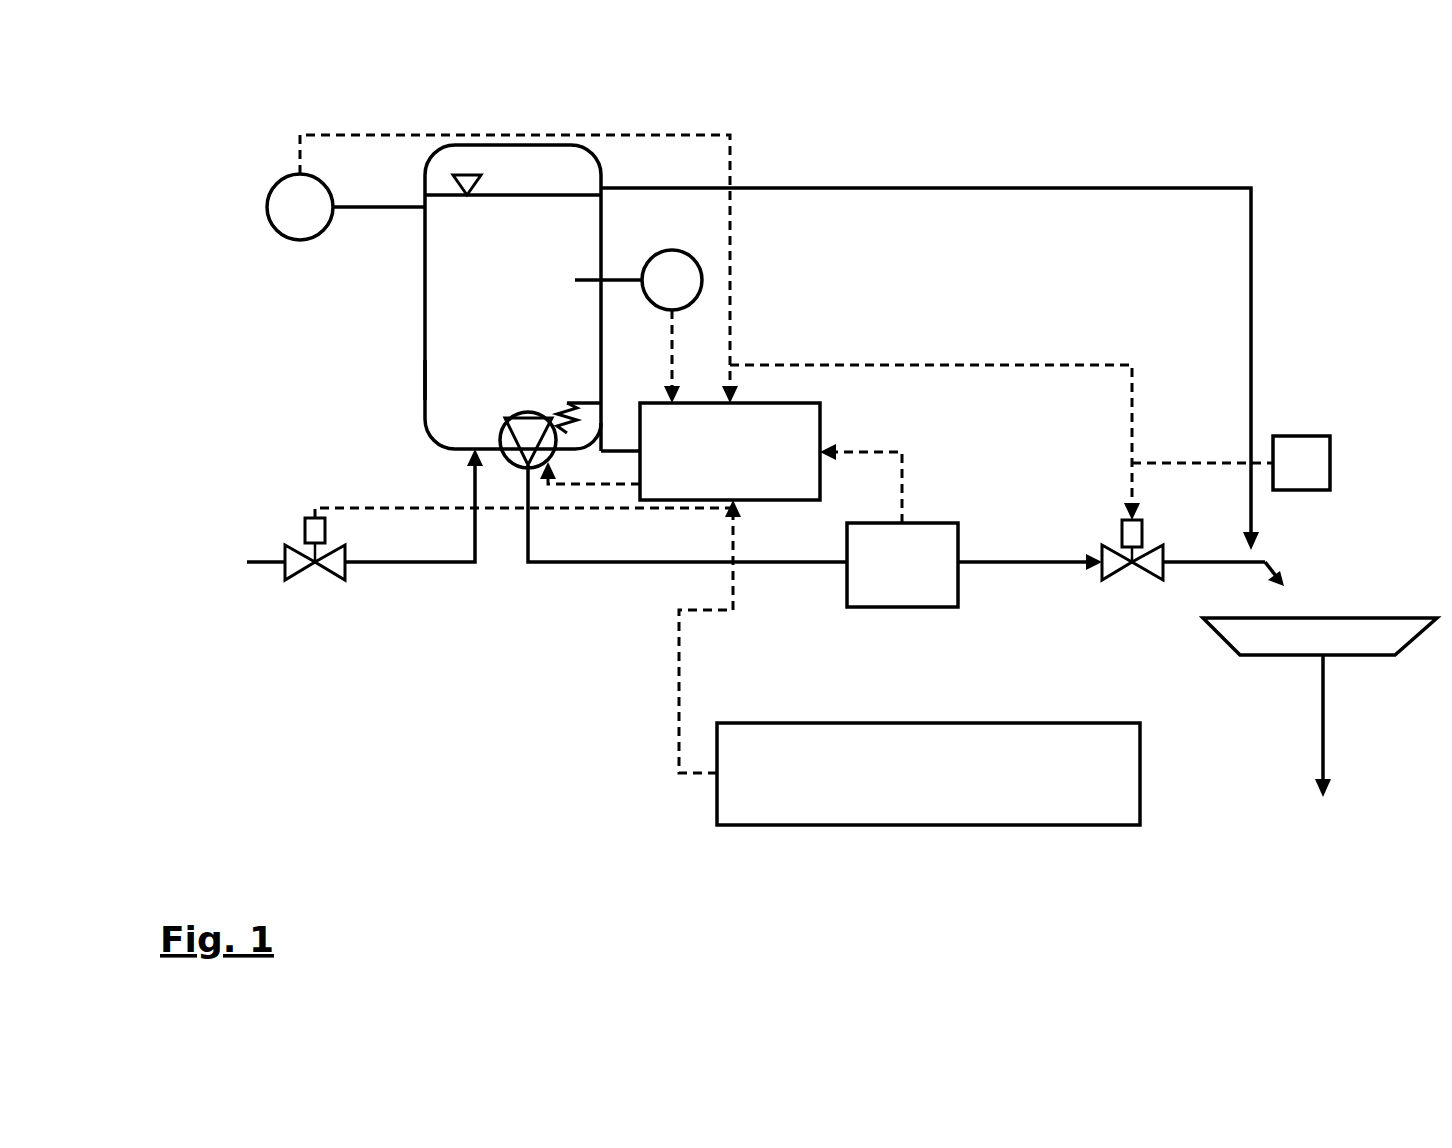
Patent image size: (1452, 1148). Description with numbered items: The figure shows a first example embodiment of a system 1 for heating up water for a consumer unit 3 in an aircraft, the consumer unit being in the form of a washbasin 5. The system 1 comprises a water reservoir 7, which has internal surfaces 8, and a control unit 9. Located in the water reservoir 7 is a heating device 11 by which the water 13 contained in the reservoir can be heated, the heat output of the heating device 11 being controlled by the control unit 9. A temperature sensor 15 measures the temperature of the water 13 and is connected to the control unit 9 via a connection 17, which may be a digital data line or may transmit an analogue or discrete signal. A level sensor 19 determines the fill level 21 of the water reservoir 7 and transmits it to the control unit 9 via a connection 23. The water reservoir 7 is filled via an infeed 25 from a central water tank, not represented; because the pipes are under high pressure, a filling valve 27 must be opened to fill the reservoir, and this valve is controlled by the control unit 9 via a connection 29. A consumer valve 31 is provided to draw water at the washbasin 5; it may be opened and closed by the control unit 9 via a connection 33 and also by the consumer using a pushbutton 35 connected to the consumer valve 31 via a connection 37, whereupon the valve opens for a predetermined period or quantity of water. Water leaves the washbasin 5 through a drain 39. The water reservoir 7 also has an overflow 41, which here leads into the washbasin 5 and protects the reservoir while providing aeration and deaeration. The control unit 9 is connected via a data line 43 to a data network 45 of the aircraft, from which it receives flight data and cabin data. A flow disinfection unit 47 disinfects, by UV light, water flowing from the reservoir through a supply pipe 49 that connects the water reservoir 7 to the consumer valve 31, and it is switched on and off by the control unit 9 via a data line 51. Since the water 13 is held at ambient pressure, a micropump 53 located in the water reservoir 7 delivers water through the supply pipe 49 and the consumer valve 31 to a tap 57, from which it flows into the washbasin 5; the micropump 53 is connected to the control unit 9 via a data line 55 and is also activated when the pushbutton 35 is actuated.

The system 1 is at (243, 146).
The consumer unit 3 is at (1320, 636).
The washbasin 5 is at (1320, 636).
The water reservoir 7 is at (425, 335).
The internal surfaces 8 is at (602, 363).
The control unit 9 is at (710, 451).
The heating device 11 is at (569, 435).
The water 13 is at (513, 257).
The temperature sensor 15 is at (638, 280).
The connection 17 is at (672, 347).
The level sensor 19 is at (346, 207).
The fill level 21 is at (468, 173).
The connection 23 is at (608, 135).
The infeed 25 is at (398, 563).
The filling valve 27 is at (300, 575).
The connection 29 is at (372, 508).
The consumer valve 31 is at (1118, 582).
The connection 33 is at (1000, 365).
The pushbutton 35 is at (1301, 463).
The connection 37 is at (1168, 463).
The drain 39 is at (1320, 733).
The overflow 41 is at (1042, 188).
The data line 43 is at (680, 685).
The data network 45 is at (928, 774).
The flow disinfection unit 47 is at (902, 565).
The supply pipe 49 is at (600, 568).
The data line 51 is at (902, 488).
The micropump 53 is at (503, 418).
The data line 55 is at (612, 487).
The tap 57 is at (1275, 565).